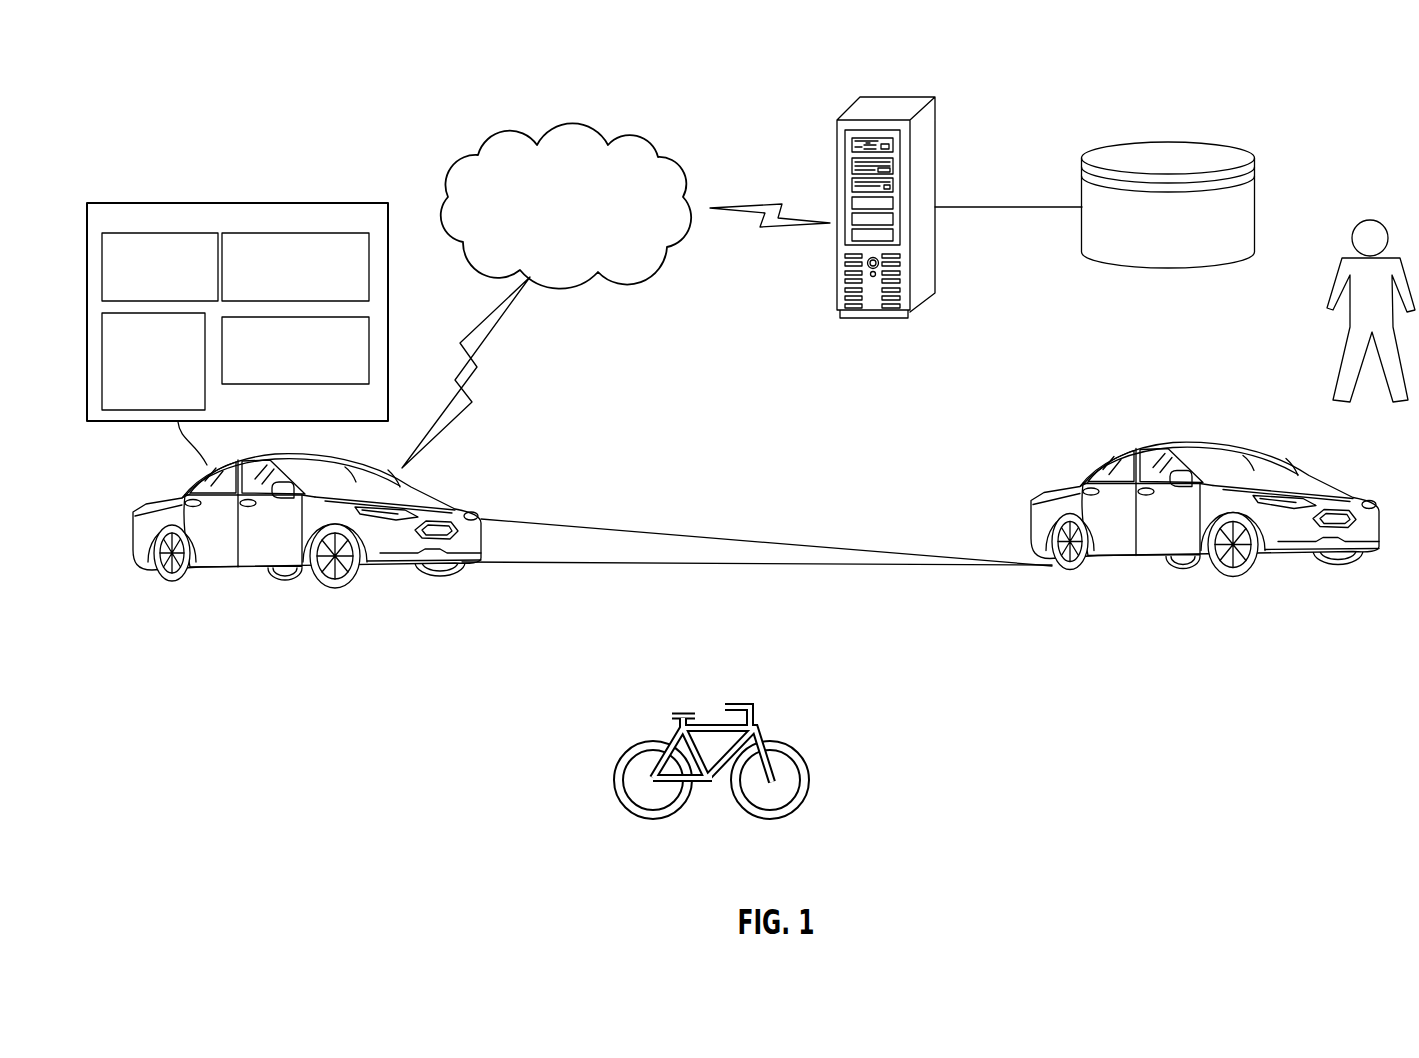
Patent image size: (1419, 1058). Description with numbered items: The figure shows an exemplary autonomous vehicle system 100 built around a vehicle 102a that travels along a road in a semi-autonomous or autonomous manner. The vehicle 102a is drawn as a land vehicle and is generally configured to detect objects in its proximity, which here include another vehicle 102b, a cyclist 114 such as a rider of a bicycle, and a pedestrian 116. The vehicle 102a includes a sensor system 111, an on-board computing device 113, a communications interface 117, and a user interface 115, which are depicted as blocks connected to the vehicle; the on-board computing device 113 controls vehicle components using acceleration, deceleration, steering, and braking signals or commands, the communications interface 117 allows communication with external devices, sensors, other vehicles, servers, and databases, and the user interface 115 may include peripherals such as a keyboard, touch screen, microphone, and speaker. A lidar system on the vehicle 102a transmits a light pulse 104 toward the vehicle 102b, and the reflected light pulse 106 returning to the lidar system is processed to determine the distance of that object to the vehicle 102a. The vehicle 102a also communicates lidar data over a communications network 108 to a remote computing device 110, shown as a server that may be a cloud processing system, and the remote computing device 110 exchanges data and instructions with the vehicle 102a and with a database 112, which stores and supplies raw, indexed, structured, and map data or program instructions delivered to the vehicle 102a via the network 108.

The AV system 100 is at (239, 141).
The vehicle 102a is at (242, 568).
The vehicle 102b is at (1140, 557).
The light pulse 104 is at (843, 548).
The reflected light pulse 106 is at (900, 566).
The communications network 108 is at (568, 125).
The remote computing device 110 is at (895, 103).
The sensor system 111 is at (160, 267).
The database 112 is at (1183, 148).
The on-board computing device 113 is at (153, 361).
The cyclist 114 is at (813, 778).
The user interface 115 is at (295, 350).
The pedestrian 116 is at (1368, 345).
The communications interface 117 is at (295, 267).